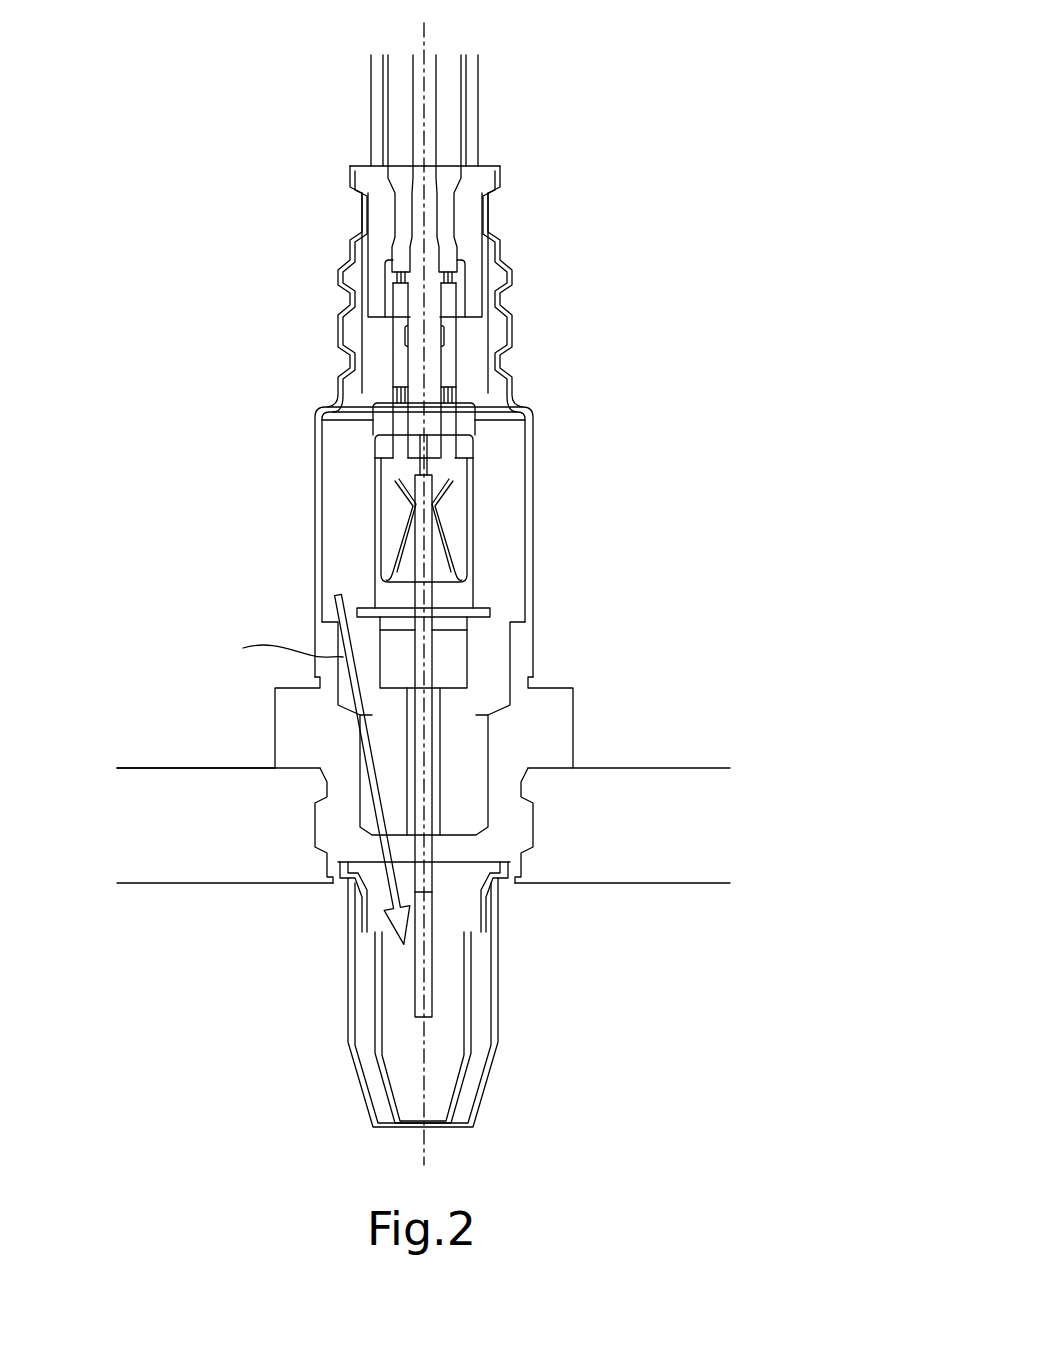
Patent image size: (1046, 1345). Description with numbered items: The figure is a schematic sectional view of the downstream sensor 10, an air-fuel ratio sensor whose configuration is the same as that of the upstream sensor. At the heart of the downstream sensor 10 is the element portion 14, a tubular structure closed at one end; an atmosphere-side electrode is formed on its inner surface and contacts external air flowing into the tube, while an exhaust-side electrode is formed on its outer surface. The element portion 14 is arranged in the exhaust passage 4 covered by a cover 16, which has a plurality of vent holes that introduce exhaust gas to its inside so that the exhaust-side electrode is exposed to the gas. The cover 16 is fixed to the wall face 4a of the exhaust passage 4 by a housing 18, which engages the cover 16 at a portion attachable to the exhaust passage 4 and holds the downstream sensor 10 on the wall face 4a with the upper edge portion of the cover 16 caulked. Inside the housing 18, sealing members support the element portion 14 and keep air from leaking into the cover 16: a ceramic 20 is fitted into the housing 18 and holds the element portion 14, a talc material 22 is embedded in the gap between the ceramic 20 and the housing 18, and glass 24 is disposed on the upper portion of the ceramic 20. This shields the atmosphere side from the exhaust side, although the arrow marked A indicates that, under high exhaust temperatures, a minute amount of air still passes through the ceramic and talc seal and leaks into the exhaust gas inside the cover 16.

The downstream sensor 10 is at (611, 338).
The element portion 14 is at (427, 965).
The cover 16 is at (497, 1072).
The housing 18 is at (543, 747).
The ceramic 20 is at (460, 795).
The talc material 22 is at (498, 718).
The glass 24 is at (452, 665).
The exhaust passage 4 is at (703, 932).
The wall face 4a is at (196, 790).